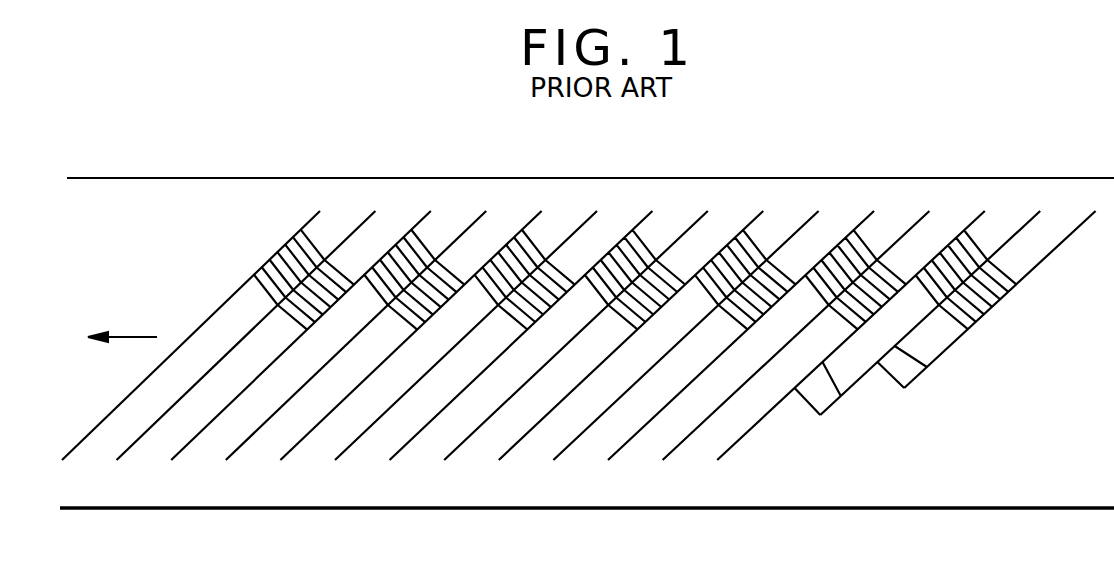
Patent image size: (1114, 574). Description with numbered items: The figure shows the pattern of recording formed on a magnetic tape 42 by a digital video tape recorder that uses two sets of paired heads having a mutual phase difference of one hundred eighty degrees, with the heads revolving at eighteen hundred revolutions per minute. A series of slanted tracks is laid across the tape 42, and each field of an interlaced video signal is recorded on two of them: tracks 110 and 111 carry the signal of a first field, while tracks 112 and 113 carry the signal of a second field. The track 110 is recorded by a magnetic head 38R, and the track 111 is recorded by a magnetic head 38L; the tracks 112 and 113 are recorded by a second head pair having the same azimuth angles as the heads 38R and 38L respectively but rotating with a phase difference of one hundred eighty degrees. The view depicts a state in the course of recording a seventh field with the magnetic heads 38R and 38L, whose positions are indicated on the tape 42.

The magnetic tape 42 is at (140, 188).
The track 110 is at (335, 208).
The track 111 is at (390, 215).
The track 112 is at (447, 217).
The track 113 is at (508, 210).
The magnetic head 38R is at (832, 400).
The magnetic head 38L is at (918, 366).